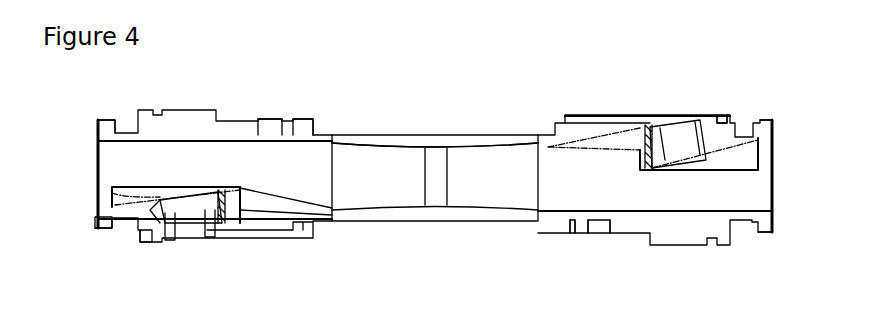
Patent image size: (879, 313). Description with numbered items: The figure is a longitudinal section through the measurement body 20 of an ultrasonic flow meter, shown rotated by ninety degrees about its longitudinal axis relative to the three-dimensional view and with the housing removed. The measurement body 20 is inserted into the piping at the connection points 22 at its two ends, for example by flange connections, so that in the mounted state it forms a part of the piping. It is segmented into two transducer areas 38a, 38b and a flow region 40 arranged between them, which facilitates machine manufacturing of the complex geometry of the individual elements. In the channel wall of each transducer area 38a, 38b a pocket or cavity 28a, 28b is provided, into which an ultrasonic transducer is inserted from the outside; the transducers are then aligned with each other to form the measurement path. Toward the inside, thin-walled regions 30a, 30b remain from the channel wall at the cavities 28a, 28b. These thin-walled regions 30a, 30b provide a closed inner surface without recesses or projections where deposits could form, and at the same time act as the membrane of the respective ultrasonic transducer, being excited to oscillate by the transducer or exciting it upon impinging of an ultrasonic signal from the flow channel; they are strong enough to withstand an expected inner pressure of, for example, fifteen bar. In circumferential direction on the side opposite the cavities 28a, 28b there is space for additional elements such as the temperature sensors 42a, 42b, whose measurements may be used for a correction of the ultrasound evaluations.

The measurement body 20 is at (633, 58).
The connection points 22 is at (78, 197).
The cavity 28a is at (223, 187).
The cavity 28b is at (683, 138).
The thin-walled region 30a is at (218, 213).
The thin-walled region 30b is at (657, 143).
The transducer area 38a is at (208, 127).
The transducer area 38b is at (592, 133).
The flow region 40 is at (436, 128).
The temperature sensor 42a is at (273, 120).
The temperature sensor 42b is at (602, 233).